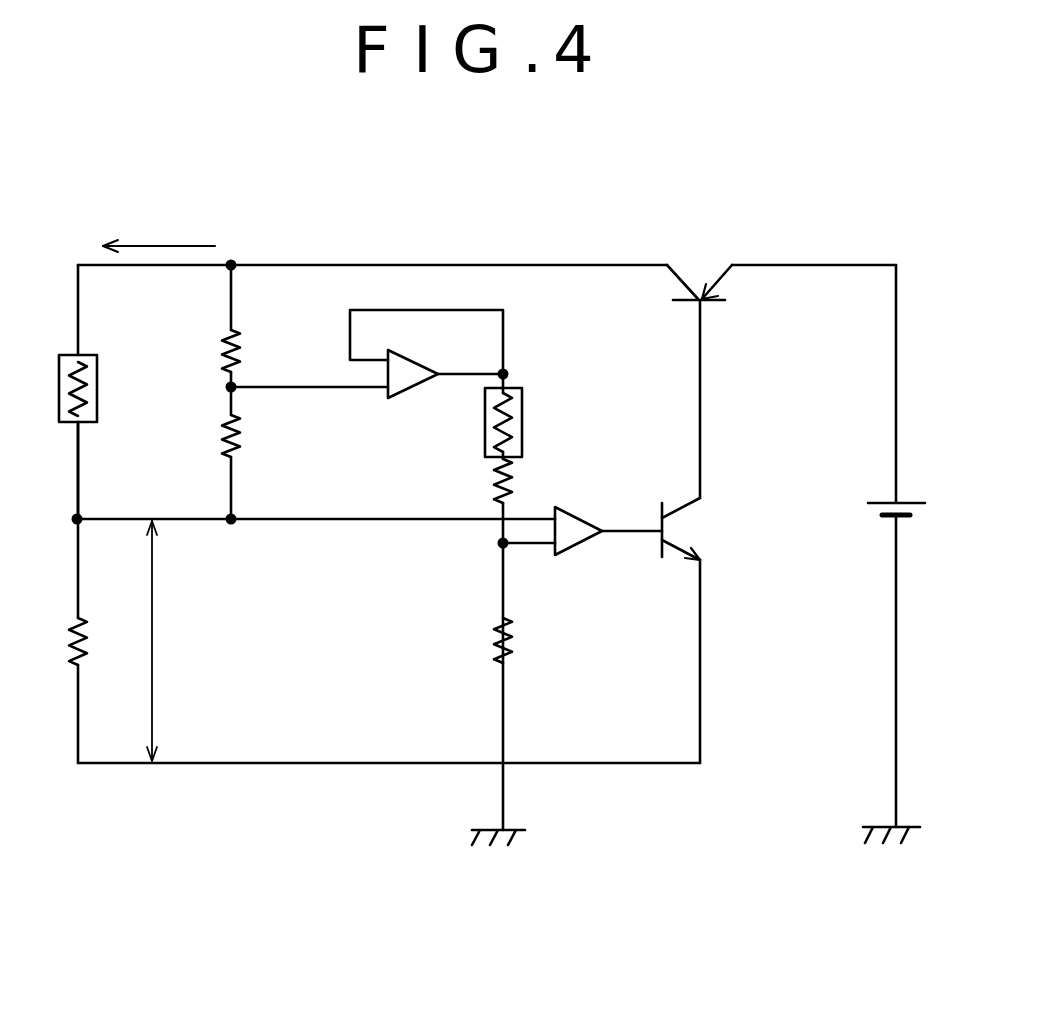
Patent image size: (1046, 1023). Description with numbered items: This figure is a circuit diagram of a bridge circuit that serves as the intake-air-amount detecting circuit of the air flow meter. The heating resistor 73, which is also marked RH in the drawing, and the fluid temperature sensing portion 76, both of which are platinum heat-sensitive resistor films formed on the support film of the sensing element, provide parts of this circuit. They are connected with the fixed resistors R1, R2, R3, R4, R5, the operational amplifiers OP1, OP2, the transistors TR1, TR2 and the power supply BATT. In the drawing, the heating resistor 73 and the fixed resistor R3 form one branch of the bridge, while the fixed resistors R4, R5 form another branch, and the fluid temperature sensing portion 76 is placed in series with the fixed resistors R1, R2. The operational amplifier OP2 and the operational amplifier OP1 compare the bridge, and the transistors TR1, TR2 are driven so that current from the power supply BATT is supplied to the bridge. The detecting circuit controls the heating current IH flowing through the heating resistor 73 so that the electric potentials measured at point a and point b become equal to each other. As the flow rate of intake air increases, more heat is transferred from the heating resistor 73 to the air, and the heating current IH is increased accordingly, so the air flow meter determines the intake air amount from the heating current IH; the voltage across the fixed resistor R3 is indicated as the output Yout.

The heating resistor 73 is at (99, 362).
The fluid temperature sensing portion 76 is at (524, 405).
The heater resistance RH is at (109, 470).
The fixed resistor R1 is at (514, 472).
The fixed resistor R2 is at (512, 627).
The fixed resistor R3 is at (86, 621).
The fixed resistor R4 is at (242, 346).
The fixed resistor R5 is at (243, 436).
The operational amplifier OP1 is at (646, 486).
The operational amplifier OP2 is at (416, 392).
The transistor TR1 is at (686, 535).
The transistor TR2 is at (672, 278).
The power supply BATT is at (887, 505).
The point a is at (233, 523).
The point b is at (498, 543).
The heating current IH is at (159, 230).
The output voltage Yout is at (192, 641).